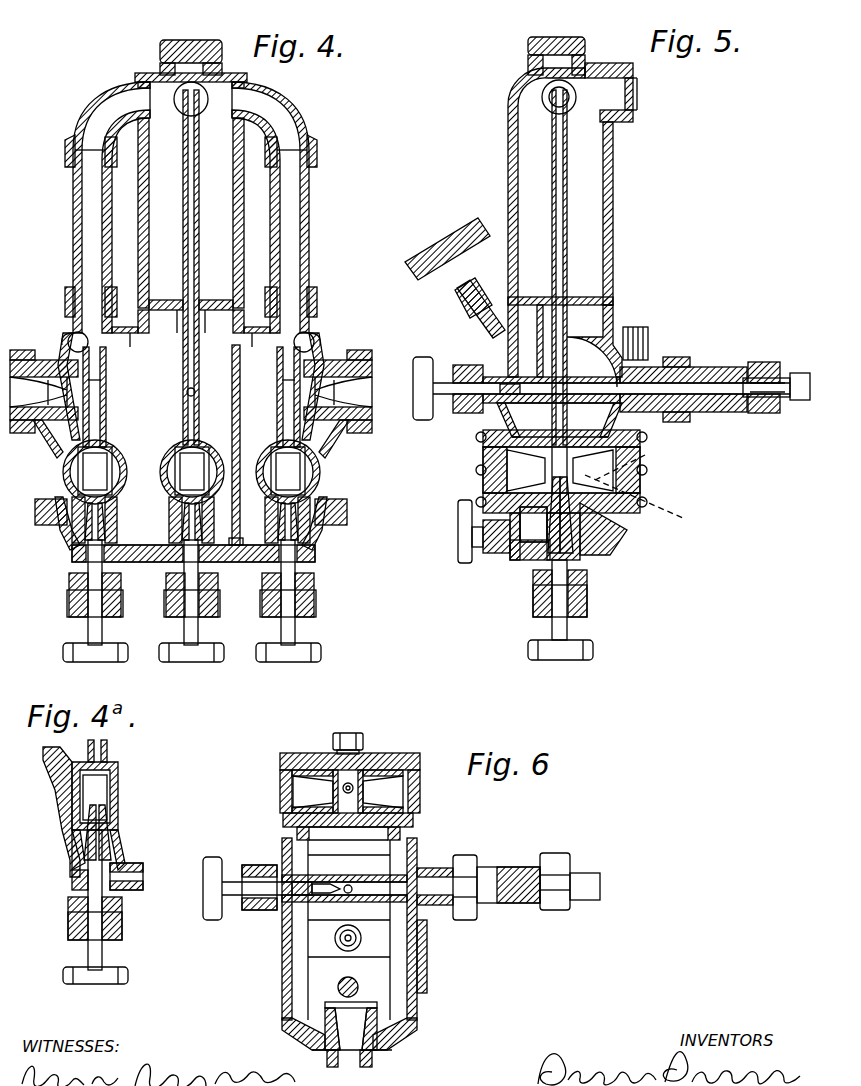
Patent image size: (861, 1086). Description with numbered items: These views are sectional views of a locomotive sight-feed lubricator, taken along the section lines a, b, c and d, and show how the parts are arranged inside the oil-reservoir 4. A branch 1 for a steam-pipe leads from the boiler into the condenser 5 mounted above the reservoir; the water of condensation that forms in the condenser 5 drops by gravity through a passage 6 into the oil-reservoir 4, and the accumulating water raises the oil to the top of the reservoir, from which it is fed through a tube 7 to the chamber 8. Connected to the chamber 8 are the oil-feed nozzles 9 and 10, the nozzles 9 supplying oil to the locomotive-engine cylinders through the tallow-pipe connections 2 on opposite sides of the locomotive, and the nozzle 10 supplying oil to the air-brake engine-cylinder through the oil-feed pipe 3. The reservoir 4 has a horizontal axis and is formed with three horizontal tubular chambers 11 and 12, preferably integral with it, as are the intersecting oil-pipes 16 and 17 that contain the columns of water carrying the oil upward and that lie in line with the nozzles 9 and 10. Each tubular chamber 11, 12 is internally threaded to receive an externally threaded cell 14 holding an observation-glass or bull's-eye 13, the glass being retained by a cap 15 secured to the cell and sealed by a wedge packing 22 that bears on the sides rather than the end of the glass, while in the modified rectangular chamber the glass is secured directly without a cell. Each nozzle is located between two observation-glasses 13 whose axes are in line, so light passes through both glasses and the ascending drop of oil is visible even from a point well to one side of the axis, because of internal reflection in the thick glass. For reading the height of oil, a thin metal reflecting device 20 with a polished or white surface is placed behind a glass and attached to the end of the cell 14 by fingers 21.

In FIG. 4, the branch for a steam-pipe 1 is at (179, 110).
In FIG. 5, the branch for a steam-pipe 1 is at (638, 96).
In FIG. 4, the tallow-pipe connections 2 is at (60, 330).
In FIG. 5, the tallow-pipe connections 2 is at (625, 327).
In FIG. 5, the oil-feed pipe 3 is at (611, 383).
In FIG. 6, the oil-feed pipe 3 is at (508, 883).
In FIG. 4, the oil-reservoir 4 is at (191, 441).
In FIG. 5, the oil-reservoir 4 is at (505, 575).
In FIG. 4A, the oil-reservoir 4 is at (56, 812).
In FIG. 6, the oil-reservoir 4 is at (357, 938).
In FIG. 4, the condenser 5 is at (191, 186).
In FIG. 5, the condenser 5 is at (568, 207).
In FIG. 5, the passage 6 is at (547, 300).
In FIG. 6, the passage 6 is at (338, 882).
In FIG. 4, the tube 7 is at (232, 352).
In FIG. 6, the tube 7 is at (335, 939).
In FIG. 4, the chamber 8 is at (149, 562).
In FIG. 5, the chamber 8 is at (595, 556).
In FIG. 4A, the chamber 8 is at (144, 880).
In FIG. 4, the oil-feed nozzle 9 is at (58, 540).
In FIG. 4A, the oil-feed nozzle 9 is at (118, 848).
In FIG. 6, the oil-feed nozzle 9 is at (352, 784).
In FIG. 4, the oil-feed nozzle 10 is at (180, 516).
In FIG. 5, the oil-feed nozzle 10 is at (535, 560).
In FIG. 6, the oil-feed nozzle 10 is at (415, 1008).
In FIG. 4, the tubular chamber 11 is at (102, 445).
In FIG. 6, the tubular chamber 11 is at (428, 1012).
In FIG. 4, the tubular chamber 12 is at (212, 447).
In FIG. 5, the tubular chamber 12 is at (592, 418).
In FIG. 6, the tubular chamber 12 is at (352, 942).
In FIG. 4, the observation-glass or bull's-eye 13 is at (191, 472).
In FIG. 5, the observation-glass or bull's-eye 13 is at (561, 470).
In FIG. 4A, the observation-glass or bull's-eye 13 is at (98, 782).
In FIG. 6, the observation-glass or bull's-eye 13 is at (347, 791).
In FIG. 4, the cell 14 is at (110, 487).
In FIG. 5, the cell 14 is at (497, 450).
In FIG. 4A, the cell 14 is at (110, 808).
In FIG. 5, the cap 15 is at (480, 487).
In FIG. 6, the cap 15 is at (280, 810).
In FIG. 4, the oil-pipe 16 is at (98, 383).
In FIG. 4A, the oil-pipe 16 is at (107, 742).
In FIG. 6, the oil-pipe 16 is at (340, 985).
In FIG. 4, the oil-pipe 17 is at (195, 392).
In FIG. 5, the oil-pipe 17 is at (556, 416).
In FIG. 6, the oil-pipe 17 is at (372, 922).
In FIG. 4, the reflecting device 20 is at (101, 380).
In FIG. 4, the fingers 21 is at (18, 433).
In FIG. 4, the packing 22 is at (55, 358).
In FIG. 5, the packing 22 is at (642, 462).
In FIG. 6, the packing 22 is at (307, 753).
In FIG. 4, the section line a a is at (143, 470).
In FIG. 5, the section line a a is at (559, 12).
In FIG. 6, the section line a a is at (258, 796).
In FIG. 4, the section line b b is at (191, 12).
In FIG. 4, the section line c c is at (58, 473).
In FIG. 4, the section line d d is at (350, 470).